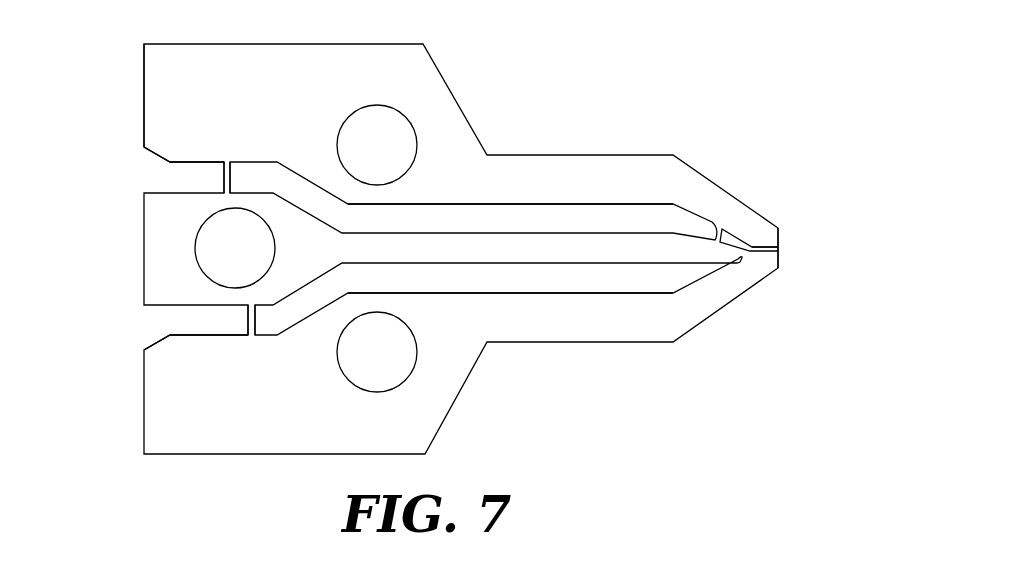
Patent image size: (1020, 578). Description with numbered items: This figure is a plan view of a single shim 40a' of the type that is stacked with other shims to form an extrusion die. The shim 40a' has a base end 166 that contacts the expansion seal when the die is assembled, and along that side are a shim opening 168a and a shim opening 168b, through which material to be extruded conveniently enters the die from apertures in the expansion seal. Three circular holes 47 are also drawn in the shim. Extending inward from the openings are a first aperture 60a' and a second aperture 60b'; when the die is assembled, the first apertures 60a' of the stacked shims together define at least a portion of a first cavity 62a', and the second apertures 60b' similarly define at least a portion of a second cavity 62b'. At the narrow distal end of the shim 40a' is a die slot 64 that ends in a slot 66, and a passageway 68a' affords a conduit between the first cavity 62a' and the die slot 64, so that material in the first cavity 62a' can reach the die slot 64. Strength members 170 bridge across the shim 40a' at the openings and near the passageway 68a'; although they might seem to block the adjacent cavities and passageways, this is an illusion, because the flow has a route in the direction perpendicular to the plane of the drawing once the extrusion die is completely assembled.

The shim 40a' is at (474, 227).
The base end 166 is at (143, 82).
The shim opening 168a is at (163, 176).
The shim opening 168b is at (165, 320).
The aperture 47 is at (207, 247).
The first aperture 60a' is at (473, 175).
The second aperture 60b' is at (498, 322).
The first cavity 62a' is at (510, 164).
The second cavity 62b' is at (510, 333).
The strength members 170 is at (227, 187).
The passageway 68a' is at (775, 213).
The slot 66 is at (783, 248).
The die slot 64 is at (757, 252).